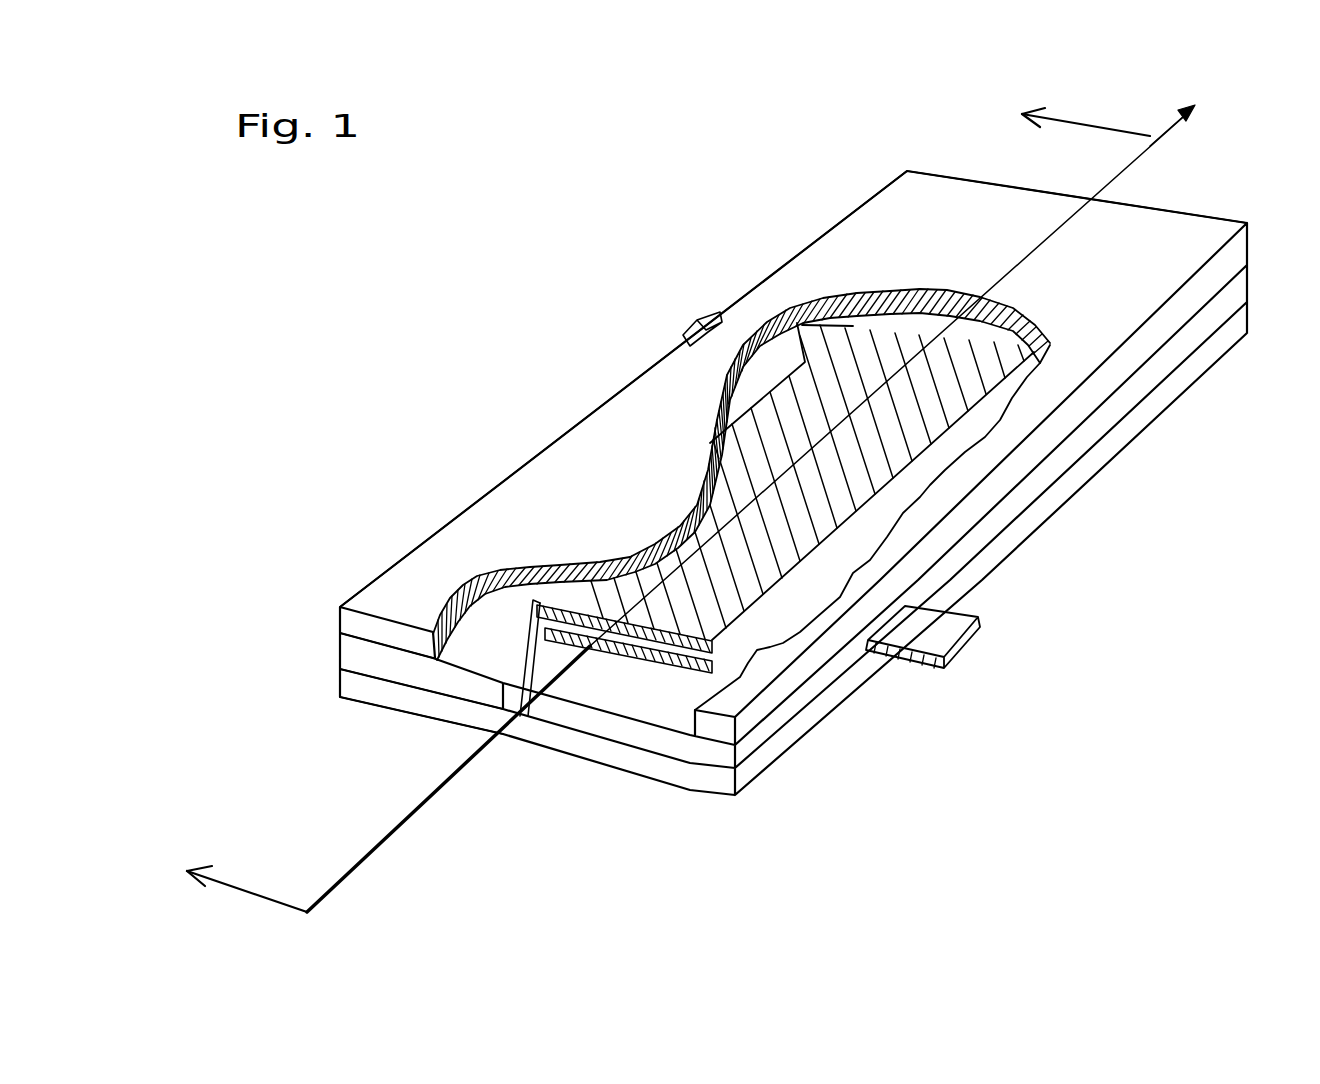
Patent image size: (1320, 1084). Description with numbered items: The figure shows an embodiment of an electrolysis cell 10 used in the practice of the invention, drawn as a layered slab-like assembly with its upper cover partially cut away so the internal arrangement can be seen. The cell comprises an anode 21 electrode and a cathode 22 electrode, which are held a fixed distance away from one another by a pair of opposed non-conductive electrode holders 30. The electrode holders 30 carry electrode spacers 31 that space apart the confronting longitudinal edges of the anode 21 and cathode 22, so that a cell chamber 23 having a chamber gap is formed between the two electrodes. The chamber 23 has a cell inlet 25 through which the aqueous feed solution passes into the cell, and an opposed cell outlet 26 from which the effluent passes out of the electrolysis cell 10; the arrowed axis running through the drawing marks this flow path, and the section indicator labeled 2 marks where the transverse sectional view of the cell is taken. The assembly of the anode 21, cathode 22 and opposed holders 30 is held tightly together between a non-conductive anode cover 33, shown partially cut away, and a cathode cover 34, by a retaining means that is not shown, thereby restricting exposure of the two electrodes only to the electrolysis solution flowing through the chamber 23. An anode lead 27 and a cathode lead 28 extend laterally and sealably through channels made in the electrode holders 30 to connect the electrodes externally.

The electrolysis cell 10 is at (640, 220).
The anode cover 33 is at (600, 440).
The cathode cover 34 is at (350, 682).
The anode 21 is at (568, 567).
The cathode 22 is at (667, 668).
The cell chamber 23 is at (607, 642).
The cell inlet 25 is at (538, 670).
The cell outlet 26 is at (1202, 140).
The anode lead 27 is at (690, 325).
The cathode lead 28 is at (935, 637).
The electrode holder 30 is at (524, 601).
The electrode spacer 31 is at (535, 625).
The section line for FIG. 2 is at (641, 502).